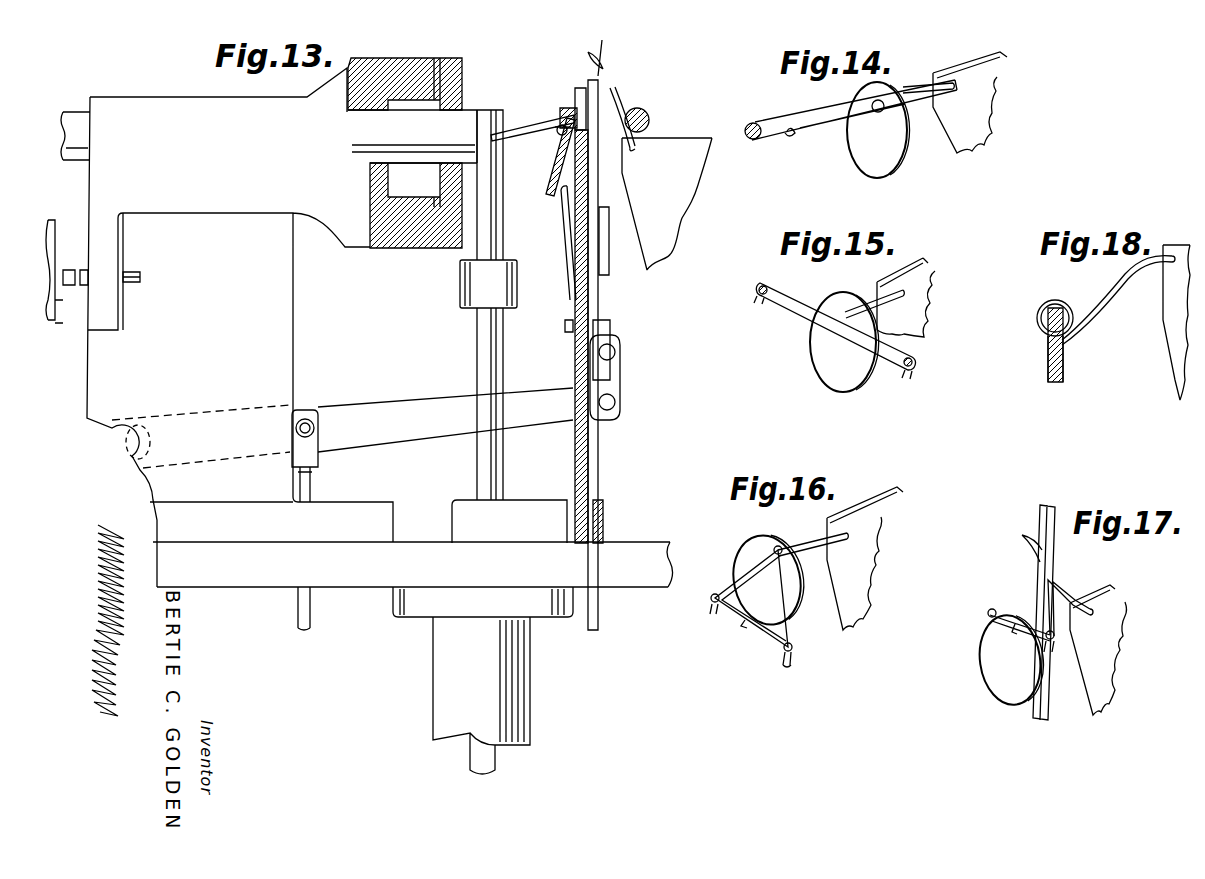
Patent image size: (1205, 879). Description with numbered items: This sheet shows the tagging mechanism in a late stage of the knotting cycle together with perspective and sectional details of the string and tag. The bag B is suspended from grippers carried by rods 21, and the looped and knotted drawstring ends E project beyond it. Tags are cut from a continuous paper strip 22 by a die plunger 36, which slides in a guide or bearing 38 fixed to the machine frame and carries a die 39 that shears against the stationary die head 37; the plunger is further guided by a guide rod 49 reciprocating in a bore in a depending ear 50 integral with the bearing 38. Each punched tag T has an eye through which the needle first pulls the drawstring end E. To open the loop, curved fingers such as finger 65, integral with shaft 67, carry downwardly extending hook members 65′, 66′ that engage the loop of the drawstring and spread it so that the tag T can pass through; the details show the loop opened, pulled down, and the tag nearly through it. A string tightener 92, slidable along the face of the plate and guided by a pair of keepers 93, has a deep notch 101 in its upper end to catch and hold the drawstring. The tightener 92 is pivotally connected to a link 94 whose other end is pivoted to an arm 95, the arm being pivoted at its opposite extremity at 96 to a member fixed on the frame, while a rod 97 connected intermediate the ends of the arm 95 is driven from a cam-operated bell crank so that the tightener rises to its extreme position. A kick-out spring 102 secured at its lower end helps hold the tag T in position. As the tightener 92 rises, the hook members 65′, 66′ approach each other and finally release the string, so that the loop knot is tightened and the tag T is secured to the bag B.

In FIG. 13, the guide or bearing 38 is at (155, 106).
In FIG. 13, the depending ear 50 is at (112, 242).
In FIG. 13, the guide rod 49 is at (142, 283).
In FIG. 13, the stationary die head 37 is at (460, 80).
In FIG. 13, the paper strip 22 is at (436, 98).
In FIG. 13, the die plunger 36 is at (412, 179).
In FIG. 13, the die 39 is at (488, 110).
In FIG. 13, the curved finger 65 is at (522, 117).
In FIG. 13, the hook member 65′ is at (559, 133).
In FIG. 15, the hook member 65′ is at (908, 378).
In FIG. 16, the hook member 65′ is at (786, 668).
In FIG. 17, the hook member 65′ is at (1062, 660).
In FIG. 15, the hook member 66′ is at (760, 305).
In FIG. 16, the hook member 66′ is at (708, 615).
In FIG. 17, the hook member 66′ is at (990, 610).
In FIG. 13, the string tightener 92 is at (598, 90).
In FIG. 13, the deep notch 101 is at (600, 40).
In FIG. 17, the deep notch 101 is at (1040, 525).
In FIG. 13, the kick-out spring 102 is at (562, 204).
In FIG. 13, the rods 21 is at (641, 115).
In FIG. 13, the keepers 93 is at (604, 258).
In FIG. 13, the link 94 is at (621, 382).
In FIG. 13, the arm 95 is at (400, 405).
In FIG. 13, the pivot 96 is at (140, 422).
In FIG. 13, the rod 97 is at (300, 612).
In FIG. 13, the shaft 67 is at (477, 759).
In FIG. 13, the tag T is at (551, 172).
In FIG. 14, the tag T is at (905, 165).
In FIG. 15, the tag T is at (826, 353).
In FIG. 18, the tag T is at (1046, 375).
In FIG. 16, the tag T is at (752, 553).
In FIG. 17, the tag T is at (998, 683).
In FIG. 13, the bag B is at (684, 144).
In FIG. 14, the bag B is at (975, 112).
In FIG. 15, the bag B is at (935, 295).
In FIG. 18, the bag B is at (1177, 318).
In FIG. 16, the bag B is at (857, 577).
In FIG. 17, the bag B is at (1102, 648).
In FIG. 14, the looped and knotted drawstring ends E is at (828, 128).